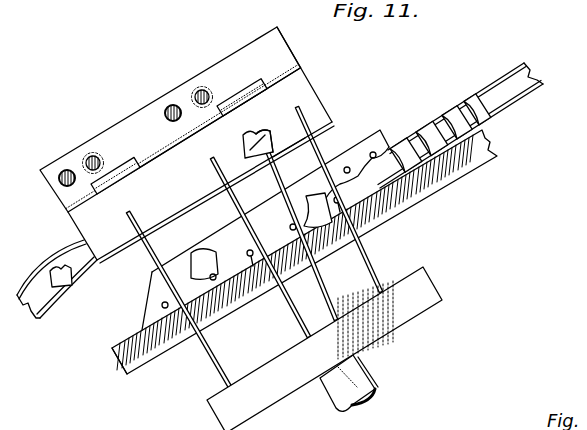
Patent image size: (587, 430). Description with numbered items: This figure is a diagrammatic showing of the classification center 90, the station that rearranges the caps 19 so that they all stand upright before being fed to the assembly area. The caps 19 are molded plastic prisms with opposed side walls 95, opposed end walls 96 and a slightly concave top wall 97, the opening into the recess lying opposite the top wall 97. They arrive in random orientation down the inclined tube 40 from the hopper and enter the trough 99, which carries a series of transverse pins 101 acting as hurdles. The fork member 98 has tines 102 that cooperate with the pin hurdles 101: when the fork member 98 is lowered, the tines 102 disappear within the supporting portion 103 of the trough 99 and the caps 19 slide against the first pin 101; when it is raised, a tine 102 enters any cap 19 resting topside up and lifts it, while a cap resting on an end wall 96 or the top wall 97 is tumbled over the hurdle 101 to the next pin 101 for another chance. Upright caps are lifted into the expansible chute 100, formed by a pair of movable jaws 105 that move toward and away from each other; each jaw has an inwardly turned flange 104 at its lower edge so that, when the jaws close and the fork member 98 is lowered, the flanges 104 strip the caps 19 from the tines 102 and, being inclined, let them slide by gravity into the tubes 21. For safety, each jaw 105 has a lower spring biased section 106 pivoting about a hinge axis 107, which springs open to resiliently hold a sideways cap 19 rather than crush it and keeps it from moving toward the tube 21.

The cap 19 is at (463, 103).
The tube 21 is at (53, 315).
The inclined tube 40 is at (510, 66).
The classification center 90 is at (162, 76).
The side wall 95 is at (270, 133).
The end wall 96 is at (290, 124).
The top wall 97 is at (258, 132).
The fork member 98 is at (425, 295).
The trough 99 is at (155, 288).
The expansible chute 100 is at (127, 147).
The transverse pin 101 is at (263, 265).
The tine 102 is at (222, 370).
The supporting portion 103 is at (128, 360).
The inwardly turned flange 104 is at (283, 147).
The movable jaw 105 is at (278, 47).
The spring biased section 106 is at (88, 225).
The hinge axis 107 is at (83, 203).